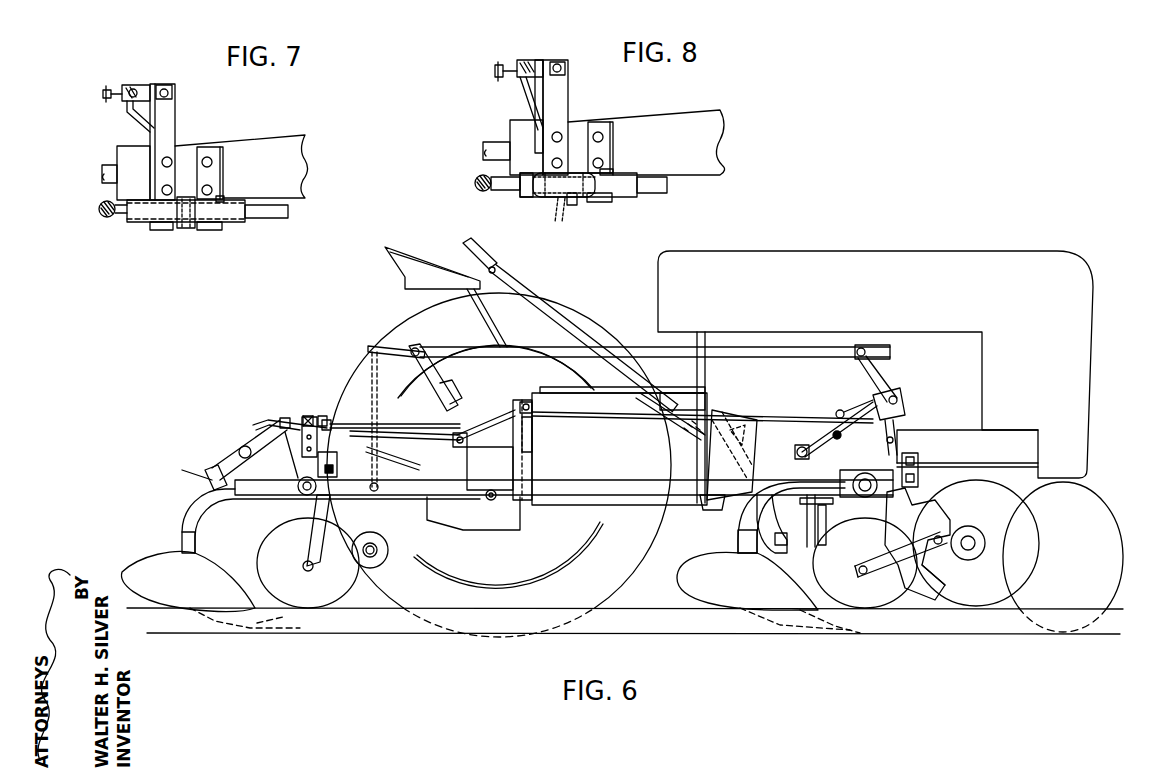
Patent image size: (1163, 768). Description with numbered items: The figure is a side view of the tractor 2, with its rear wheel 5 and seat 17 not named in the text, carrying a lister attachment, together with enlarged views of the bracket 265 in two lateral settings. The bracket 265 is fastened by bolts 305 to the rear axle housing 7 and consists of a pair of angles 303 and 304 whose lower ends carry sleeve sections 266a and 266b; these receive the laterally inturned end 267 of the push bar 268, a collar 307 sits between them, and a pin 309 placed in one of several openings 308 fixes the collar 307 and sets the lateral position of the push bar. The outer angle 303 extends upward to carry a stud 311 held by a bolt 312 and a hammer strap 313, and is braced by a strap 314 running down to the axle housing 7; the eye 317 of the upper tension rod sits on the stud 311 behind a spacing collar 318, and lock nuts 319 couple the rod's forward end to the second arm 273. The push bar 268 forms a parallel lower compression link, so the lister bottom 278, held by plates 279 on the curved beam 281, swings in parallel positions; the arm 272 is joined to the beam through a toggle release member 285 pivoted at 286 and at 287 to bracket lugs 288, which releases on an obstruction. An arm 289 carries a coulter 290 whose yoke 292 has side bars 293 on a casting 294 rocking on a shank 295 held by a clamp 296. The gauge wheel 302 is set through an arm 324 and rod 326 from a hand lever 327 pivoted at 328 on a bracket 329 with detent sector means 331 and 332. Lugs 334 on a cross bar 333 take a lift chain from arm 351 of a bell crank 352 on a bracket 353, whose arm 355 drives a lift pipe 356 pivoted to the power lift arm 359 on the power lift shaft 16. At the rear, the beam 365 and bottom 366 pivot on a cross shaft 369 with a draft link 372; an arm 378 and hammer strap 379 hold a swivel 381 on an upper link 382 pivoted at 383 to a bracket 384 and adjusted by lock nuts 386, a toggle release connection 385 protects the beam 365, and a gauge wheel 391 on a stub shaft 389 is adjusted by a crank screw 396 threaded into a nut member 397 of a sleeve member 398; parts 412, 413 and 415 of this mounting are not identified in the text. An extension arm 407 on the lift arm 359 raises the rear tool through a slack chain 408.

In FIG. 6, the tractor 2 is at (915, 247).
In FIG. 6, the rear wheel 5 is at (1100, 532).
In FIG. 7, the rear axle housing 7 is at (288, 146).
In FIG. 8, the rear axle housing 7 is at (705, 116).
In FIG. 6, the rear axle housing 7 is at (535, 397).
In FIG. 6, the power lift shaft 16 is at (466, 356).
In FIG. 6, the seat 17 is at (385, 247).
In FIG. 7, the bracket 265 is at (143, 232).
In FIG. 8, the bracket 265 is at (530, 200).
In FIG. 6, the bracket 265 is at (535, 447).
In FIG. 7, the sleeve section 266a is at (160, 231).
In FIG. 8, the sleeve section 266a is at (528, 178).
In FIG. 7, the sleeve section 266b is at (218, 231).
In FIG. 8, the sleeve section 266b is at (606, 200).
In FIG. 7, the laterally inturned end 267 is at (270, 218).
In FIG. 8, the laterally inturned end 267 is at (660, 190).
In FIG. 7, the push bar 268 is at (103, 216).
In FIG. 8, the push bar 268 is at (476, 188).
In FIG. 6, the push bar 268 is at (628, 479).
In FIG. 6, the arm 272 is at (860, 497).
In FIG. 6, the second arm 273 is at (916, 452).
In FIG. 6, the lister bottom 278 is at (740, 594).
In FIG. 6, the plates 279 is at (738, 541).
In FIG. 6, the beam 281 is at (770, 522).
In FIG. 6, the toggle release member 285 is at (800, 416).
In FIG. 6, the pivot 286 is at (835, 430).
In FIG. 6, the pivot 287 is at (795, 452).
In FIG. 6, the bracket lugs 288 is at (807, 515).
In FIG. 6, the arm 289 is at (828, 522).
In FIG. 6, the coulter 290 is at (862, 602).
In FIG. 6, the coulter yoke 292 is at (945, 578).
In FIG. 6, the side bars 293 is at (863, 578).
In FIG. 6, the casting 294 is at (984, 541).
In FIG. 6, the coulter supporting shank 295 is at (945, 528).
In FIG. 6, the clamp 296 is at (960, 465).
In FIG. 6, the gauge wheel 302 is at (961, 604).
In FIG. 7, the angle 303 is at (170, 127).
In FIG. 8, the angle 303 is at (565, 104).
In FIG. 6, the angle 303 is at (533, 465).
In FIG. 7, the angle 304 is at (217, 150).
In FIG. 8, the angle 304 is at (604, 125).
In FIG. 7, the bolts 305 is at (173, 164).
In FIG. 8, the bolts 305 is at (563, 162).
In FIG. 7, the collar 307 is at (186, 229).
In FIG. 8, the collar 307 is at (613, 172).
In FIG. 8, the openings 308 is at (561, 212).
In FIG. 7, the pin 309 is at (222, 200).
In FIG. 8, the pin 309 is at (576, 205).
In FIG. 7, the stud 311 is at (107, 90).
In FIG. 8, the stud 311 is at (508, 65).
In FIG. 6, the stud 311 is at (520, 401).
In FIG. 7, the bolt 312 is at (170, 90).
In FIG. 8, the bolt 312 is at (566, 68).
In FIG. 7, the hammer strap 313 is at (128, 116).
In FIG. 8, the hammer strap 313 is at (524, 95).
In FIG. 6, the hammer strap 313 is at (533, 425).
In FIG. 6, the strap 314 is at (485, 428).
In FIG. 7, the eye 317 is at (131, 88).
In FIG. 8, the eye 317 is at (514, 66).
In FIG. 7, the spacing collar 318 is at (154, 88).
In FIG. 8, the spacing collar 318 is at (540, 62).
In FIG. 6, the lock nuts 319 is at (840, 409).
In FIG. 6, the arm 324 is at (922, 464).
In FIG. 6, the rod 326 is at (798, 445).
In FIG. 6, the hand lever 327 is at (592, 342).
In FIG. 6, the pivot 328 is at (712, 466).
In FIG. 6, the bracket 329 is at (712, 503).
In FIG. 6, the detent sector means 331 is at (690, 428).
In FIG. 6, the detent sector means 332 is at (733, 424).
In FIG. 6, the cross bar 333 is at (818, 528).
In FIG. 6, the lugs 334 is at (781, 545).
In FIG. 6, the arm 351 is at (884, 385).
In FIG. 6, the bell crank 352 is at (905, 392).
In FIG. 6, the bracket 353 is at (900, 420).
In FIG. 6, the arm 355 is at (866, 349).
In FIG. 6, the lift pipe 356 is at (748, 346).
In FIG. 6, the power lift arm 359 is at (419, 348).
In FIG. 6, the rear lister beam 365 is at (210, 503).
In FIG. 6, the rear lister bottom 366 is at (210, 577).
In FIG. 6, the cross shaft 369 is at (301, 493).
In FIG. 6, the draft link 372 is at (400, 500).
In FIG. 6, the arm 378 is at (323, 415).
In FIG. 6, the hammer strap 379 is at (306, 415).
In FIG. 6, the swivel 381 is at (300, 416).
In FIG. 6, the upper link 382 is at (345, 423).
In FIG. 6, the pivot 383 is at (453, 441).
In FIG. 6, the bracket 384 is at (243, 446).
In FIG. 6, the toggle release connection 385 is at (228, 452).
In FIG. 6, the lock nuts 386 is at (324, 419).
In FIG. 6, the stub shaft 389 is at (377, 559).
In FIG. 6, the gauge wheel 391 is at (381, 600).
In FIG. 6, the adjusting crank screw 396 is at (253, 425).
In FIG. 6, the nut member 397 is at (400, 432).
In FIG. 6, the sleeve member 398 is at (421, 465).
In FIG. 6, the extension arm 407 is at (390, 346).
In FIG. 6, the chain 408 is at (371, 365).
In FIG. 6, the block 412 is at (330, 478).
In FIG. 6, the arm 413 is at (320, 556).
In FIG. 6, the disc 415 is at (308, 600).